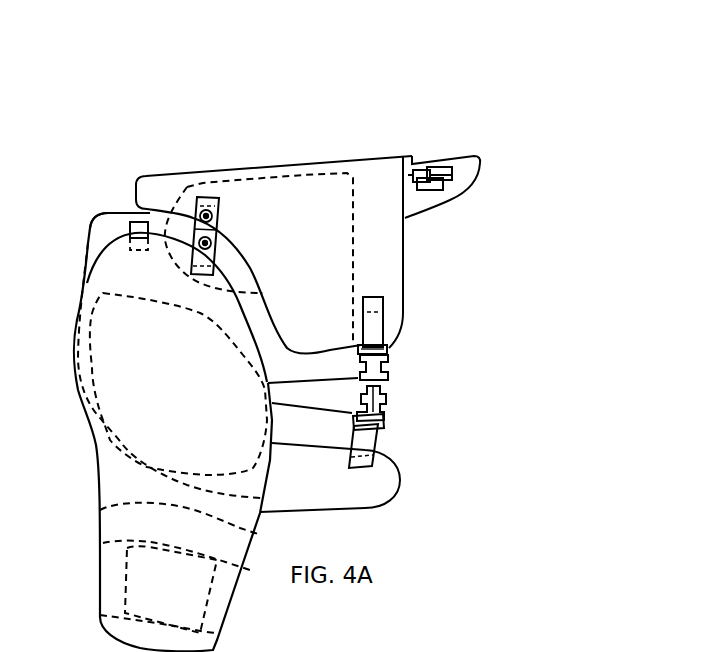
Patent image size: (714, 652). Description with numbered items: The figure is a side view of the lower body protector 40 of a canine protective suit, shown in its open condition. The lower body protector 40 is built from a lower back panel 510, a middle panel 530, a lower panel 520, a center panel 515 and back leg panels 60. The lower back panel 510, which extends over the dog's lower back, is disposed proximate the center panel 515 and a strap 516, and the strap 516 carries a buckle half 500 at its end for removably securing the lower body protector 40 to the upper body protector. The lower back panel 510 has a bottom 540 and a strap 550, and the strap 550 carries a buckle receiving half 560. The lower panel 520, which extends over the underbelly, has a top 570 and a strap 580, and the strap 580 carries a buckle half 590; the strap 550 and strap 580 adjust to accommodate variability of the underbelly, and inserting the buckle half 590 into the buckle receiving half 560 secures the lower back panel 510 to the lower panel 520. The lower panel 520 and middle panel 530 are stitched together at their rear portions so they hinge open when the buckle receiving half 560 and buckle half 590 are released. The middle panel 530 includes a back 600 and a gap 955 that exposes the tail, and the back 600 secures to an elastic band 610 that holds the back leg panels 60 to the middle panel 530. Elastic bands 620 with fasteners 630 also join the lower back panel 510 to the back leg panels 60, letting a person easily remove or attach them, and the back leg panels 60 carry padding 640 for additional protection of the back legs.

The lower body protector 40 is at (276, 121).
The back leg panels 60 is at (108, 480).
The buckle half 500 is at (435, 178).
The lower back panel 510 is at (323, 188).
The center panel 515 is at (468, 163).
The strap 516 is at (413, 177).
The lower panel 520 is at (380, 497).
The middle panel 530 is at (325, 357).
The bottom 540 is at (391, 306).
The strap 550 is at (375, 328).
The buckle receiving half 560 is at (380, 367).
The top 570 is at (383, 470).
The strap 580 is at (368, 442).
The buckle half 590 is at (380, 412).
The back 600 is at (103, 228).
The elastic band 610 is at (122, 215).
The elastic bands 620 is at (197, 262).
The fasteners 630 is at (222, 232).
The padding 640 is at (80, 358).
The gap 955 is at (98, 193).